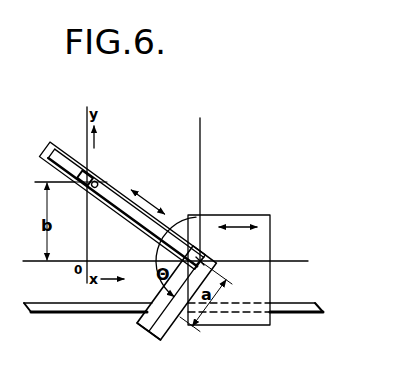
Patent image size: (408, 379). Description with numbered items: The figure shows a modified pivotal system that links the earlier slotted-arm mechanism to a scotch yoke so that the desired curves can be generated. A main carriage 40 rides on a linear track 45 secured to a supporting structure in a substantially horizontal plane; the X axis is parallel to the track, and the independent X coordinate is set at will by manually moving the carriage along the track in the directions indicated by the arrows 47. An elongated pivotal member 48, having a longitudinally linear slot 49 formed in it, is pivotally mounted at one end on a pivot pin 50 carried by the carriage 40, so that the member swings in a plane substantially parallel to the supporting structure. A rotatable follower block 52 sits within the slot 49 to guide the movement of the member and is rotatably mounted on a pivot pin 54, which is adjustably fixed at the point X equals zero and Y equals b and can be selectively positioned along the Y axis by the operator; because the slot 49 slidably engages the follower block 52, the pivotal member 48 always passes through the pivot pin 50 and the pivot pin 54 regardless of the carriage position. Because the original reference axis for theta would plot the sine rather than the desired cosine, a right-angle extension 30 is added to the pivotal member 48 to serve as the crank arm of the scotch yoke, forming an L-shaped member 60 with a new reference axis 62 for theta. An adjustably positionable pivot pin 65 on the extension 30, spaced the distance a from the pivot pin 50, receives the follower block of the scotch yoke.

The right-angle extension 30 is at (164, 338).
The main carriage 40 is at (271, 232).
The linear track 45 is at (290, 303).
The arrows 47 is at (239, 226).
The elongated pivotal member 48 is at (113, 211).
The longitudinally linear slot 49 is at (68, 165).
The pivot pin 50 is at (205, 258).
The rotatable follower block 52 is at (97, 182).
The pivot pin 54 is at (74, 185).
The L-shaped member 60 is at (140, 232).
The reference axis 62 is at (201, 171).
The adjustably positionable pivot pin 65 is at (148, 321).